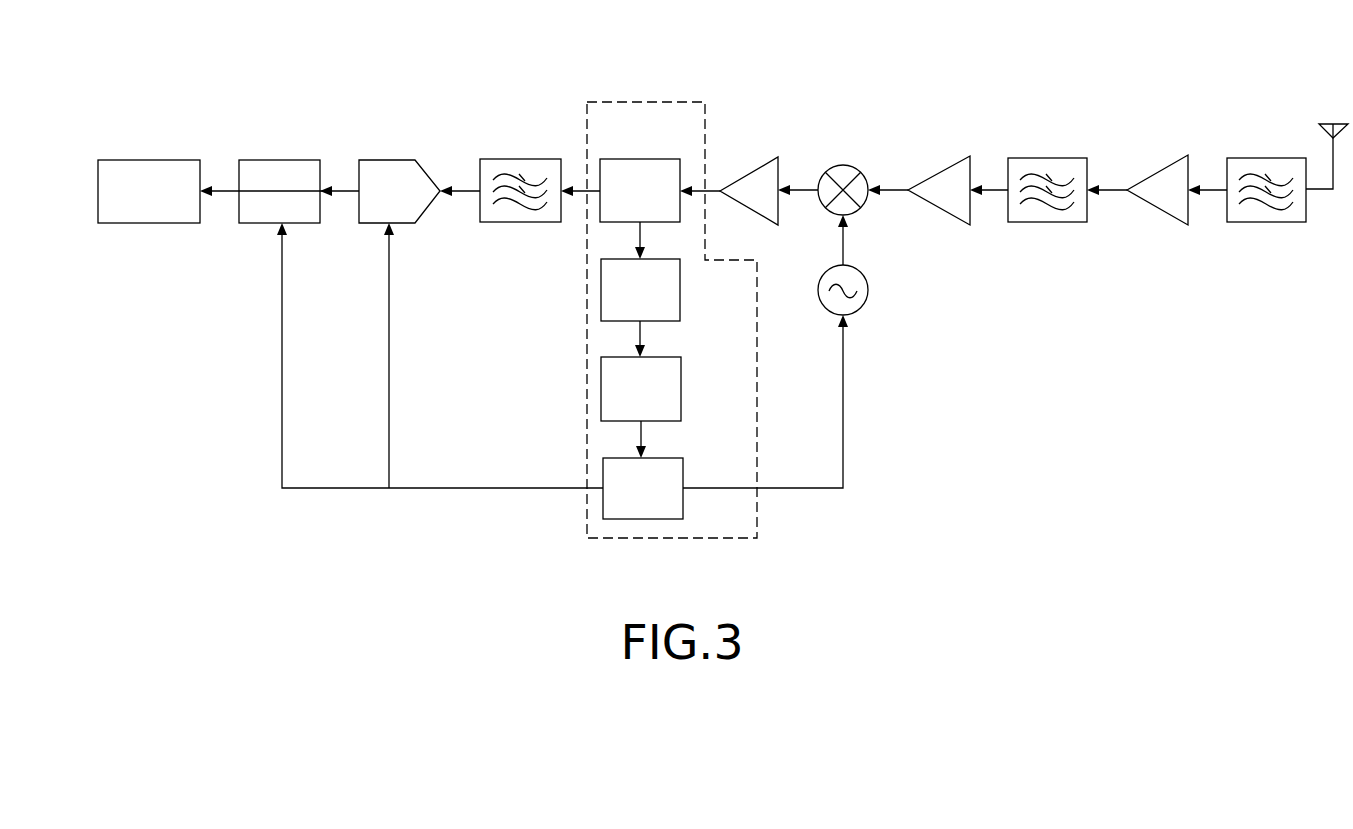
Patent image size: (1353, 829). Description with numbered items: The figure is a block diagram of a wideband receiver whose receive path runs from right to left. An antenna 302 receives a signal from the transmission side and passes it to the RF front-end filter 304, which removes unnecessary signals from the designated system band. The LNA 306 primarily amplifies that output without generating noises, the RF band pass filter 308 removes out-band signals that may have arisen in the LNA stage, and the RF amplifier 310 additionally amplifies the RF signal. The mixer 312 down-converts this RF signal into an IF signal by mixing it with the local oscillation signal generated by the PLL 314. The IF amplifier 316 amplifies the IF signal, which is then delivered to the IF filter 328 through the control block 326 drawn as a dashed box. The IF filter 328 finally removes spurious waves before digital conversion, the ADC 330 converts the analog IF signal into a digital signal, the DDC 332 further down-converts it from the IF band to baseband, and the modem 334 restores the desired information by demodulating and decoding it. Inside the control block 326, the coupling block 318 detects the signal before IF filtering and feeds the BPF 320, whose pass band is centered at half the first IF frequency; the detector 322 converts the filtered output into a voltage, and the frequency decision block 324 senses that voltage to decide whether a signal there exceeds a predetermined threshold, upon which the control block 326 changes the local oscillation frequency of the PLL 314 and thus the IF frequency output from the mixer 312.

The antenna 302 is at (1333, 124).
The RF front-end filter 304 is at (1265, 158).
The low noise amplifier 306 is at (1158, 172).
The RF band pass filter 308 is at (1047, 158).
The RF amplifier 310 is at (940, 171).
The mixer 312 is at (843, 165).
The phase locked loop 314 is at (868, 290).
The IF amplifier 316 is at (752, 171).
The coupling block 318 is at (638, 159).
The band pass filter 320 is at (681, 288).
The detector 322 is at (682, 388).
The frequency decision block 324 is at (684, 470).
The control block 326 is at (643, 102).
The IF filter 328 is at (520, 159).
The analog-to-digital converter 330 is at (388, 160).
The digital down-converter 332 is at (280, 160).
The modem 334 is at (149, 160).